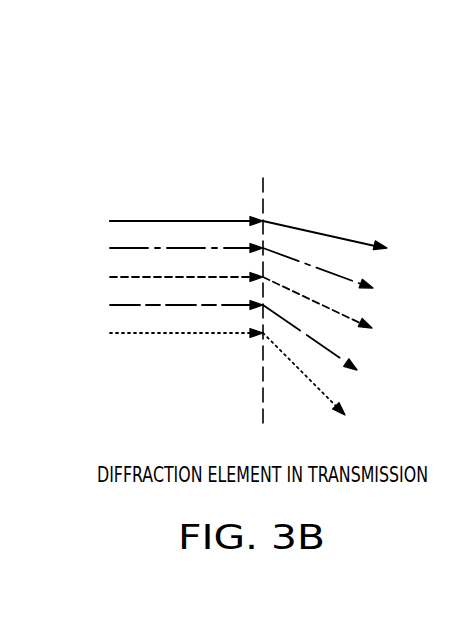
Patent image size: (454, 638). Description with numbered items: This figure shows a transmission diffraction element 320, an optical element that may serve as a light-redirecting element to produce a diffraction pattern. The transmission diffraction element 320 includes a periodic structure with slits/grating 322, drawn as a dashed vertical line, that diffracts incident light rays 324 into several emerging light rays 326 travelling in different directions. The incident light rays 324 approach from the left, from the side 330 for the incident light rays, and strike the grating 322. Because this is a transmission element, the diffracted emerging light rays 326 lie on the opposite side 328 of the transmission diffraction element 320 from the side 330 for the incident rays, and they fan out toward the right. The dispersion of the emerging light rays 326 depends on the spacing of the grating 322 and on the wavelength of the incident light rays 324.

The transmission diffraction element 320 is at (123, 135).
The slits/grating 322 is at (263, 336).
The incident light rays 324 is at (112, 277).
The emerging light rays 326 is at (318, 388).
The opposite side 328 is at (283, 221).
The side for the incident light rays 330 is at (203, 219).